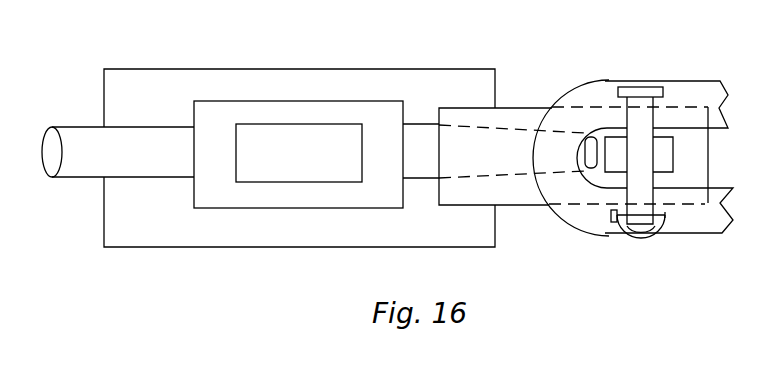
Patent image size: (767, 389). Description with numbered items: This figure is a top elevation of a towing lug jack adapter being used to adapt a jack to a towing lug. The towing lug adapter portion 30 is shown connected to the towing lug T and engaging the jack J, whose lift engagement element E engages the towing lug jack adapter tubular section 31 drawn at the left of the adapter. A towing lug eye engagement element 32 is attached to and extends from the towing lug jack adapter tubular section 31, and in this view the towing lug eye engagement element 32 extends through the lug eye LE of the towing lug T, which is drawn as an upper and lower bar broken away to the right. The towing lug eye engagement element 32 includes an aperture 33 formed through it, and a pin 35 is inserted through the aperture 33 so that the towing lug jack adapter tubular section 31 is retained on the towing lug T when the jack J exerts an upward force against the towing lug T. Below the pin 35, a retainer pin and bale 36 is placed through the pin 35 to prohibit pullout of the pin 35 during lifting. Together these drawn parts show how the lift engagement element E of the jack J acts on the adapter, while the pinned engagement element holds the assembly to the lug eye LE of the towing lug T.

The towing lug adapter portion 30 is at (624, 138).
The towing lug jack adapter tubular section 31 is at (527, 192).
The towing lug eye engagement element 32 is at (673, 153).
The aperture 33 is at (657, 152).
The pin 35 is at (635, 97).
The retainer pin and bale 36 is at (612, 222).
The jack J is at (208, 108).
The lift engagement element E is at (413, 124).
The towing lug T is at (673, 85).
The lug eye LE is at (687, 180).